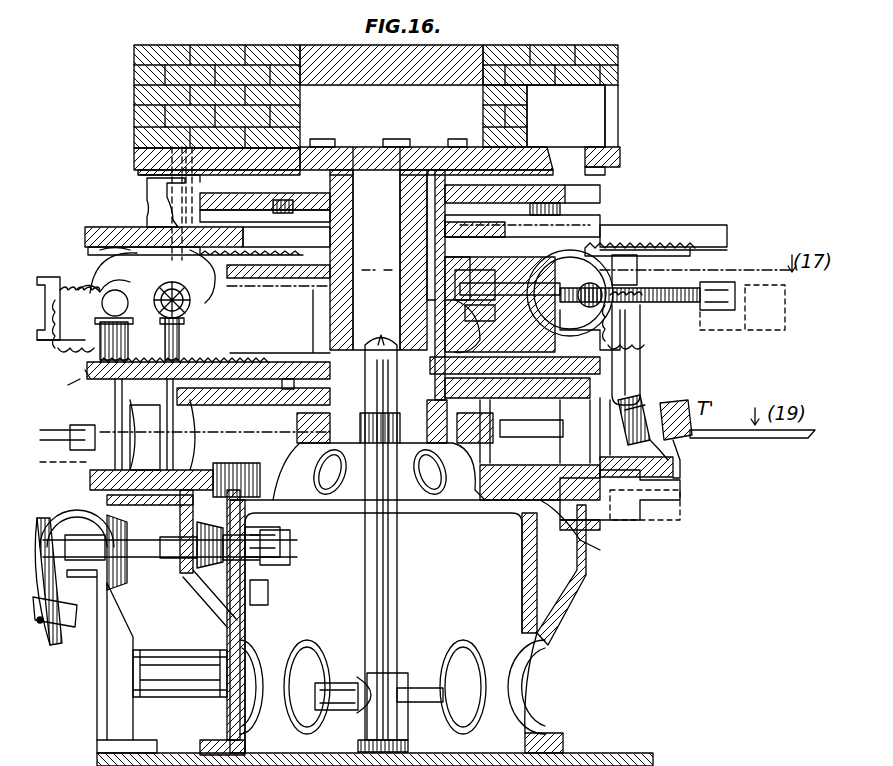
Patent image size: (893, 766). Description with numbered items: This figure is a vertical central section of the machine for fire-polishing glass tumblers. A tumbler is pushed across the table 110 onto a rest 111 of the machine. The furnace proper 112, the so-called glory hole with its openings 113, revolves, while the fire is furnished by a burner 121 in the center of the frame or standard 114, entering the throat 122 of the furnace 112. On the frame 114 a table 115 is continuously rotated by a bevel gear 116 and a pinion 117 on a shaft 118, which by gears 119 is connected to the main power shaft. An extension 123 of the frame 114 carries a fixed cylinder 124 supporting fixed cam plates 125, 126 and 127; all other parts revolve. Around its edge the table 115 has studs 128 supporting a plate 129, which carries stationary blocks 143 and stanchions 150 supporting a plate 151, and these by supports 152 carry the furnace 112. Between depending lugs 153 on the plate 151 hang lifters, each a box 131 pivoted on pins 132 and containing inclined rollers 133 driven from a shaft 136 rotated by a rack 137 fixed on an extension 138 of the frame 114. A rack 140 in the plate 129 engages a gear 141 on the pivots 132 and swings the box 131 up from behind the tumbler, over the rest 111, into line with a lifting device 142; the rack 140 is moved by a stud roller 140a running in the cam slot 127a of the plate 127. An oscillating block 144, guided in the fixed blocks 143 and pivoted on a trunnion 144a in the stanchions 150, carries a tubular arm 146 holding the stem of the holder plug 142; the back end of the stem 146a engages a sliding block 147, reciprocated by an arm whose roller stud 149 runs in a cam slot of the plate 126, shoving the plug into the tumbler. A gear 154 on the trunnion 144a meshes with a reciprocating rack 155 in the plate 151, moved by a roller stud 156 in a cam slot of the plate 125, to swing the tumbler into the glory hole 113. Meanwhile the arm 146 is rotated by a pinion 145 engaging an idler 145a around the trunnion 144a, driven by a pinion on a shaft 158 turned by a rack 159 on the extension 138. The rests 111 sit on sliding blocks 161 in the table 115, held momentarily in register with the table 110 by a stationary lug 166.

The table 110 is at (763, 437).
The rest 111 is at (80, 460).
The furnace 112 is at (134, 74).
The openings 113 is at (337, 137).
The frame or standard 114 is at (590, 595).
The table 115 is at (100, 497).
The bevel gear 116 is at (600, 552).
The pinion 117 is at (268, 592).
The shaft 118 is at (180, 567).
The gears 119 is at (72, 647).
The burner 121 is at (390, 580).
The throat 122 is at (378, 248).
The extension 123 is at (462, 493).
The fixed cylinder 124 is at (440, 376).
The fixed cam plate 125 is at (605, 157).
The fixed cam plate 126 is at (600, 240).
The fixed cam plate 127 is at (600, 388).
The cam slot 127a is at (190, 463).
The studs 128 is at (538, 433).
The plate 129 is at (262, 362).
The lifting device or box 131 is at (600, 397).
The pins 132 is at (77, 373).
The rollers 133 is at (667, 407).
The shaft 136 is at (117, 402).
The rack 137 is at (167, 493).
The extension 138 is at (203, 600).
The rack 140 is at (77, 377).
The stud roller 140a is at (285, 362).
The gear 141 is at (105, 309).
The lifting device or holder plug 142 is at (737, 303).
The fixed blocks 143 is at (529, 301).
The oscillating block 144 is at (205, 297).
The trunnion 144a is at (163, 290).
The pinion 145 is at (633, 262).
The idler 145a is at (696, 254).
The tubular arm 146 is at (690, 307).
The stem 146a is at (487, 310).
The sliding block 147 is at (445, 282).
The roller stud 149 is at (565, 212).
The stanchions 150 is at (123, 227).
The plate 151 is at (140, 220).
The supports 152 is at (163, 200).
The depending lugs 153 is at (83, 253).
The gear 154 is at (710, 230).
The reciprocating rack 155 is at (713, 233).
The roller stud 156 is at (540, 215).
The shaft 158 is at (297, 483).
The rack 159 is at (600, 550).
The sliding blocks 161 is at (677, 467).
The stationary lug 166 is at (680, 490).